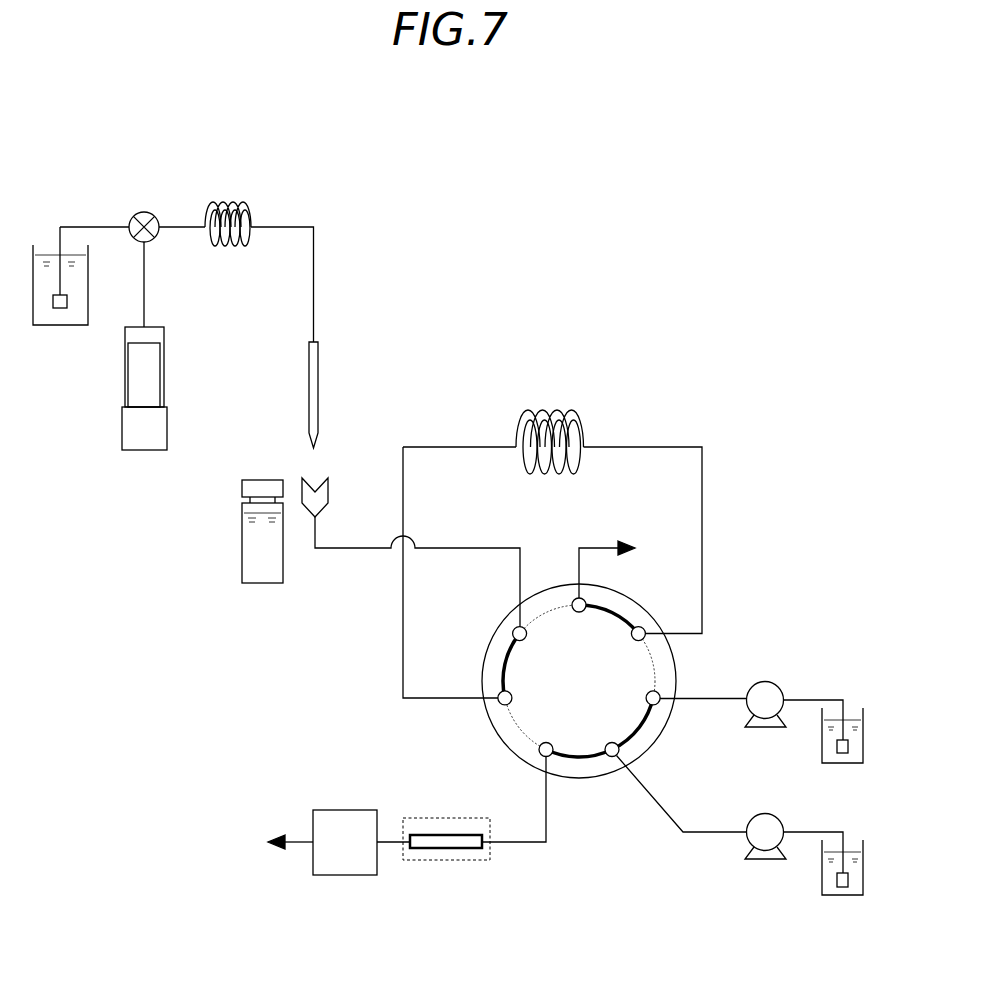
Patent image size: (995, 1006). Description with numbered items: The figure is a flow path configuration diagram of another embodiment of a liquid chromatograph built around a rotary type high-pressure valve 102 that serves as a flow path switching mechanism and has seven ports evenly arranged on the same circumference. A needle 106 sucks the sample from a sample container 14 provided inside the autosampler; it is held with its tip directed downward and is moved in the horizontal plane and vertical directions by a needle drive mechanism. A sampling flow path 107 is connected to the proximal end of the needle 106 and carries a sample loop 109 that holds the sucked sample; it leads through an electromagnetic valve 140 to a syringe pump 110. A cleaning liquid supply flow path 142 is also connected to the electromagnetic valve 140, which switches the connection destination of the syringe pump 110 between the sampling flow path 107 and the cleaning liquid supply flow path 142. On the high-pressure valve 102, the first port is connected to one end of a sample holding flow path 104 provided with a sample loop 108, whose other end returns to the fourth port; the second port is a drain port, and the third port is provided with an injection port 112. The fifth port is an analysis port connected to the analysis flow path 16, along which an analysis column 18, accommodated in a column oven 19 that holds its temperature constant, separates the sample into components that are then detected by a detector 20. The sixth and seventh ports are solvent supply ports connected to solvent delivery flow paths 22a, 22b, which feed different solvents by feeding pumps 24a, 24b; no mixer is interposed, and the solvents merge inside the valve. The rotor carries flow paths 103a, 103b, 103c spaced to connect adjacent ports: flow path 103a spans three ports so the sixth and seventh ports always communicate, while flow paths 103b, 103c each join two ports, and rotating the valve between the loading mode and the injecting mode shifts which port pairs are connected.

The cleaning liquid supply flow path 142 is at (80, 226).
The electromagnetic valve 140 is at (143, 210).
The sample loop 109 is at (247, 200).
The sampling flow path 107 is at (297, 220).
The needle 106 is at (318, 382).
The syringe pump 110 is at (125, 375).
The sample container 14 is at (267, 585).
The injection port 112 is at (330, 490).
The sample loop 108 is at (568, 412).
The sample holding flow path 104 is at (637, 445).
The high-pressure valve 102 is at (580, 659).
The flow path 103a is at (642, 732).
The flow path 103b is at (618, 613).
The flow path 103c is at (498, 660).
The solvent delivery flow path 22b is at (700, 698).
The feeding pump 24b is at (777, 683).
The solvent delivery flow path 22a is at (708, 830).
The feeding pump 24a is at (777, 817).
The analysis flow path 16 is at (518, 845).
The analysis column 18 is at (443, 835).
The column oven 19 is at (455, 862).
The detector 20 is at (338, 877).